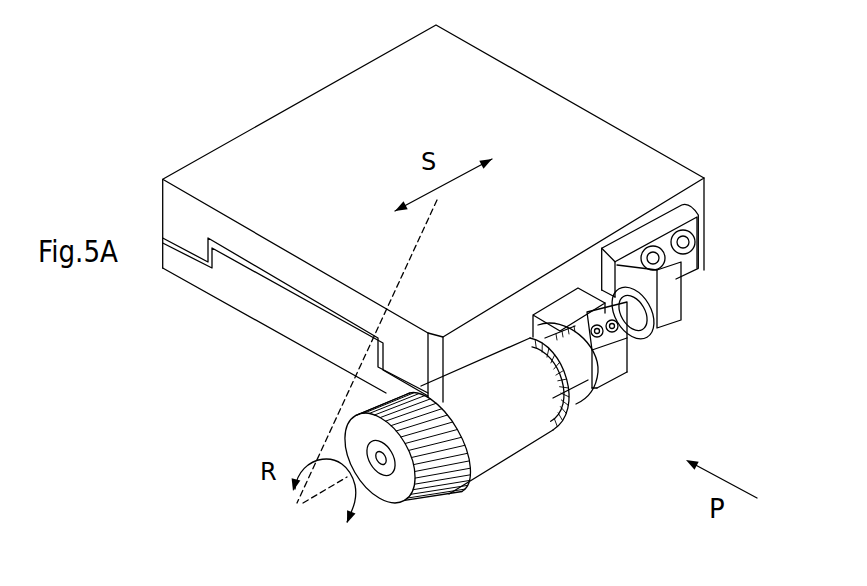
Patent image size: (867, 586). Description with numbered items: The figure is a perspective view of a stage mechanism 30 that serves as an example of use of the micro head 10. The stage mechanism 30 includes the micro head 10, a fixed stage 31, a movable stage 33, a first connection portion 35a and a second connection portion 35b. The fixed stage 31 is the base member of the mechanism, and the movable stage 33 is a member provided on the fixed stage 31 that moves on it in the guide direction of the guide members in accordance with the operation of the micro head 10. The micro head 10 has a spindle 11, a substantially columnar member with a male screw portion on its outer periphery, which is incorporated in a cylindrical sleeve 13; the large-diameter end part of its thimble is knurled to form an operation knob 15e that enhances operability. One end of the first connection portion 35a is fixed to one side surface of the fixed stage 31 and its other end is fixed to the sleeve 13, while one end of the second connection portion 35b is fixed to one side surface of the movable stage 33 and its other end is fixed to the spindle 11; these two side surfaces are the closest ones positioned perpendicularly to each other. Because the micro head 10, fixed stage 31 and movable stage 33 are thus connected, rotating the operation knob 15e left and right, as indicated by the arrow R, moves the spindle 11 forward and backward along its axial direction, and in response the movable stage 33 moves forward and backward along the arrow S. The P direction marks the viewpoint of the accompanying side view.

The stage mechanism 30 is at (556, 62).
The movable stage 33 is at (323, 132).
The fixed stage 31 is at (240, 298).
The micro head 10 is at (524, 444).
The operation knob 15e is at (444, 483).
The sleeve 13 is at (565, 376).
The first connection portion 35a is at (613, 363).
The second connection portion 35b is at (697, 270).
The spindle 11 is at (652, 336).